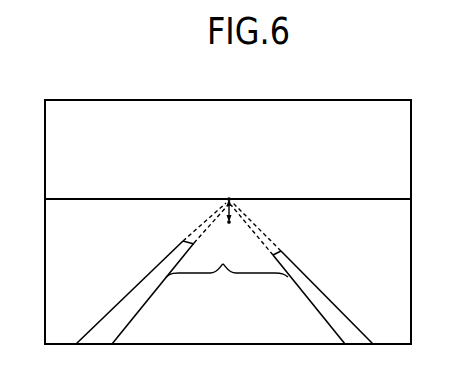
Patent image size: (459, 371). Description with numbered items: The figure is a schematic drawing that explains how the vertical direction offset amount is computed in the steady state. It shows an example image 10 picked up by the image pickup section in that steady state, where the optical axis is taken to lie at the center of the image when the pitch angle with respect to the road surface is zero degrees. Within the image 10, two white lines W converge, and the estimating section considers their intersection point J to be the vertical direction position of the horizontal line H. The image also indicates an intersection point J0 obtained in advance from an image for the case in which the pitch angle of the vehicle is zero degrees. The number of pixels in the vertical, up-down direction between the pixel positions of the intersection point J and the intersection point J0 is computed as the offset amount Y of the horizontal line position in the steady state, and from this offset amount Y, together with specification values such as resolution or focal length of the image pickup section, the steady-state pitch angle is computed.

The image 10 is at (374, 100).
The horizontal line H is at (342, 199).
The intersection point J is at (229, 199).
The intersection point J0 is at (234, 216).
The offset amount Y is at (221, 204).
The white lines W is at (227, 254).